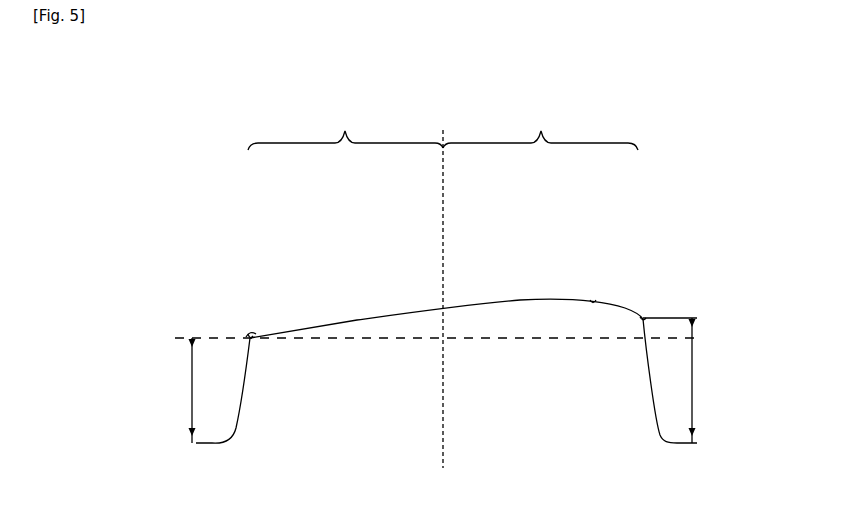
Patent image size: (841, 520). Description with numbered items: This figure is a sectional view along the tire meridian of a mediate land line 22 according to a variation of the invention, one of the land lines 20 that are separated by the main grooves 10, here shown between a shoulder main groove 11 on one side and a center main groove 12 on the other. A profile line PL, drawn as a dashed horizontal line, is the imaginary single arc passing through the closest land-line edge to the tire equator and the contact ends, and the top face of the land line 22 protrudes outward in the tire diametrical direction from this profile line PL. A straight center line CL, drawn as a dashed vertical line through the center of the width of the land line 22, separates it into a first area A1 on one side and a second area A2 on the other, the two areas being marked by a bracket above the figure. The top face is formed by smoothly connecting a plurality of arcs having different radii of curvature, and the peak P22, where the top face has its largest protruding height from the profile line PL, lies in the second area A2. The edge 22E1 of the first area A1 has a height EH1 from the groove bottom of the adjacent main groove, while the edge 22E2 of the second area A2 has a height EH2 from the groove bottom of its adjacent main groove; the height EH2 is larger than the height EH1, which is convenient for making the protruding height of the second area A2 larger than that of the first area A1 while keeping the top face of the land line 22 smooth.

The main grooves 10 is at (441, 346).
The shoulder main groove 11 is at (207, 443).
The center main groove 12 is at (670, 444).
The land lines 20 is at (444, 268).
The mediate land line 22 is at (357, 320).
The edge 22E1 is at (250, 337).
The edge 22E2 is at (643, 319).
The peak P22 is at (593, 302).
The profile line PL is at (199, 334).
The center line CL is at (445, 282).
The first area A1 is at (345, 127).
The second area A2 is at (540, 127).
The height of edge 22E1 EH1 is at (172, 390).
The height of edge 22E2 EH2 is at (690, 380).